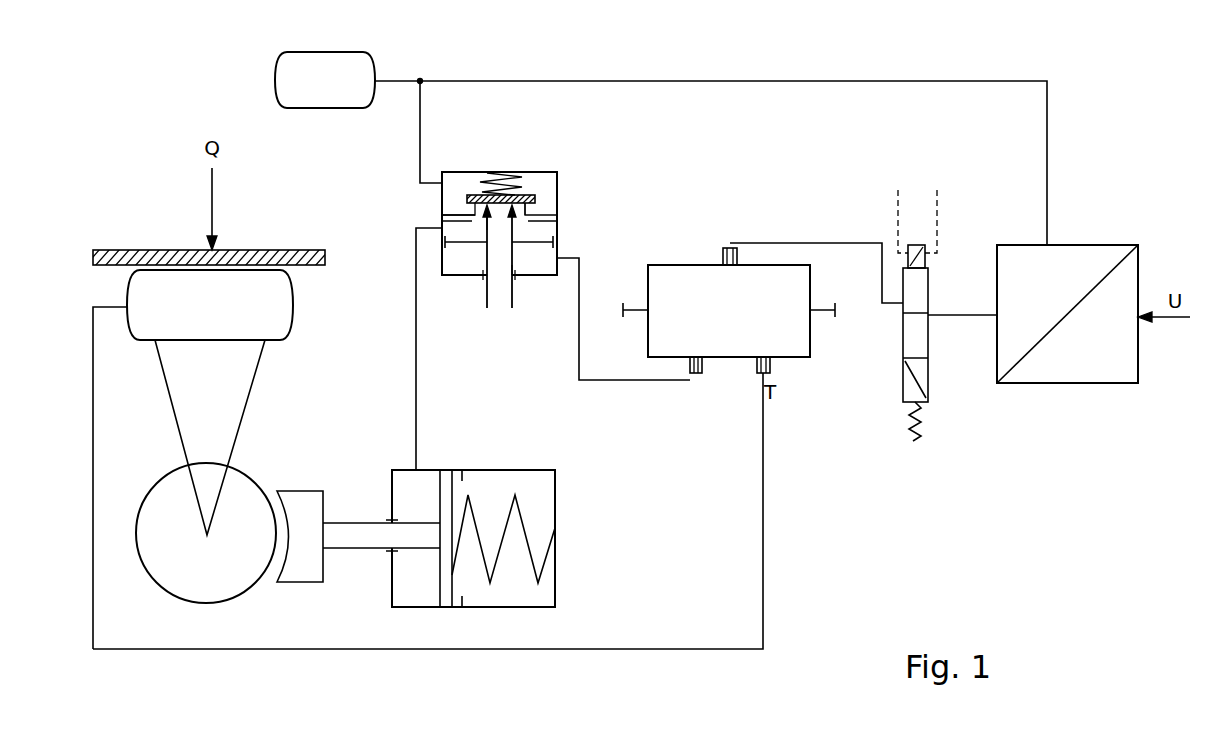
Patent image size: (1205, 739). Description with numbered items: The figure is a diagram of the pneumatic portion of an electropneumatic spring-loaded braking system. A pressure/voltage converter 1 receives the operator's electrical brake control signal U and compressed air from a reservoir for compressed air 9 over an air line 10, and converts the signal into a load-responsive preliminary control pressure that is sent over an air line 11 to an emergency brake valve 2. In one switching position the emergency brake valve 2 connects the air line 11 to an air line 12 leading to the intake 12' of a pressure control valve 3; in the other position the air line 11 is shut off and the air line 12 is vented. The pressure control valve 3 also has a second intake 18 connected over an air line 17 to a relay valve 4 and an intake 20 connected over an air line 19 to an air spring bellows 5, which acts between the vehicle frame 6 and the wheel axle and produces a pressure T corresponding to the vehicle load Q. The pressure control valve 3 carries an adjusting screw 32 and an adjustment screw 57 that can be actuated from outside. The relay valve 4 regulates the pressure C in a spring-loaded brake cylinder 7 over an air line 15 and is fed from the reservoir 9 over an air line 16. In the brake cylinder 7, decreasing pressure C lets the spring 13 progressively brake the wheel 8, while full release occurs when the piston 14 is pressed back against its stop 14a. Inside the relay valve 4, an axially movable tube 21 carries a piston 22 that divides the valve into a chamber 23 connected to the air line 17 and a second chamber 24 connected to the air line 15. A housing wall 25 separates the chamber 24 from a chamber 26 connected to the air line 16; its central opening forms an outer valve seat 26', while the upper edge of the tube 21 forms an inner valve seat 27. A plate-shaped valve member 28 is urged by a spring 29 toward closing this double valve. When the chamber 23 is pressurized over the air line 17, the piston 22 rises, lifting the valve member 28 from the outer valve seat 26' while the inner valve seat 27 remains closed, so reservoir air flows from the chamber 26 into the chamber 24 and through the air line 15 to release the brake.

The pressure/voltage converter 1 is at (1065, 385).
The emergency brake valve 2 is at (894, 370).
The pressure control valve 3 is at (786, 366).
The relay valve 4 is at (463, 160).
The air spring bellows 5 is at (283, 330).
The vehicle frame 6 is at (305, 250).
The spring-loaded brake cylinder 7 is at (536, 613).
The wheel 8 is at (166, 582).
The reservoir for compressed air 9 is at (330, 105).
The air line 10 is at (823, 81).
The air line 11 is at (955, 317).
The air line 12 is at (816, 250).
The intake 12' is at (709, 235).
The spring 13 is at (527, 527).
The piston 14 is at (442, 590).
The stop 14a is at (462, 600).
The air line 15 is at (416, 272).
The air line 16 is at (420, 120).
The air line 17 is at (636, 383).
The second intake 18 is at (700, 370).
The air line 19 is at (628, 649).
The intake 20 is at (757, 370).
The axially movable tube 21 is at (487, 296).
The piston 22 is at (497, 213).
The chamber 23 is at (522, 275).
The second chamber 24 is at (458, 227).
The housing wall 25 is at (530, 212).
The chamber 26 is at (451, 178).
The outer valve seat 26' is at (467, 203).
The inner valve seat 27 is at (480, 238).
The valve member 28 is at (520, 193).
The spring 29 is at (490, 180).
The adjusting screw 32 is at (622, 306).
The adjustment screw 57 is at (836, 306).